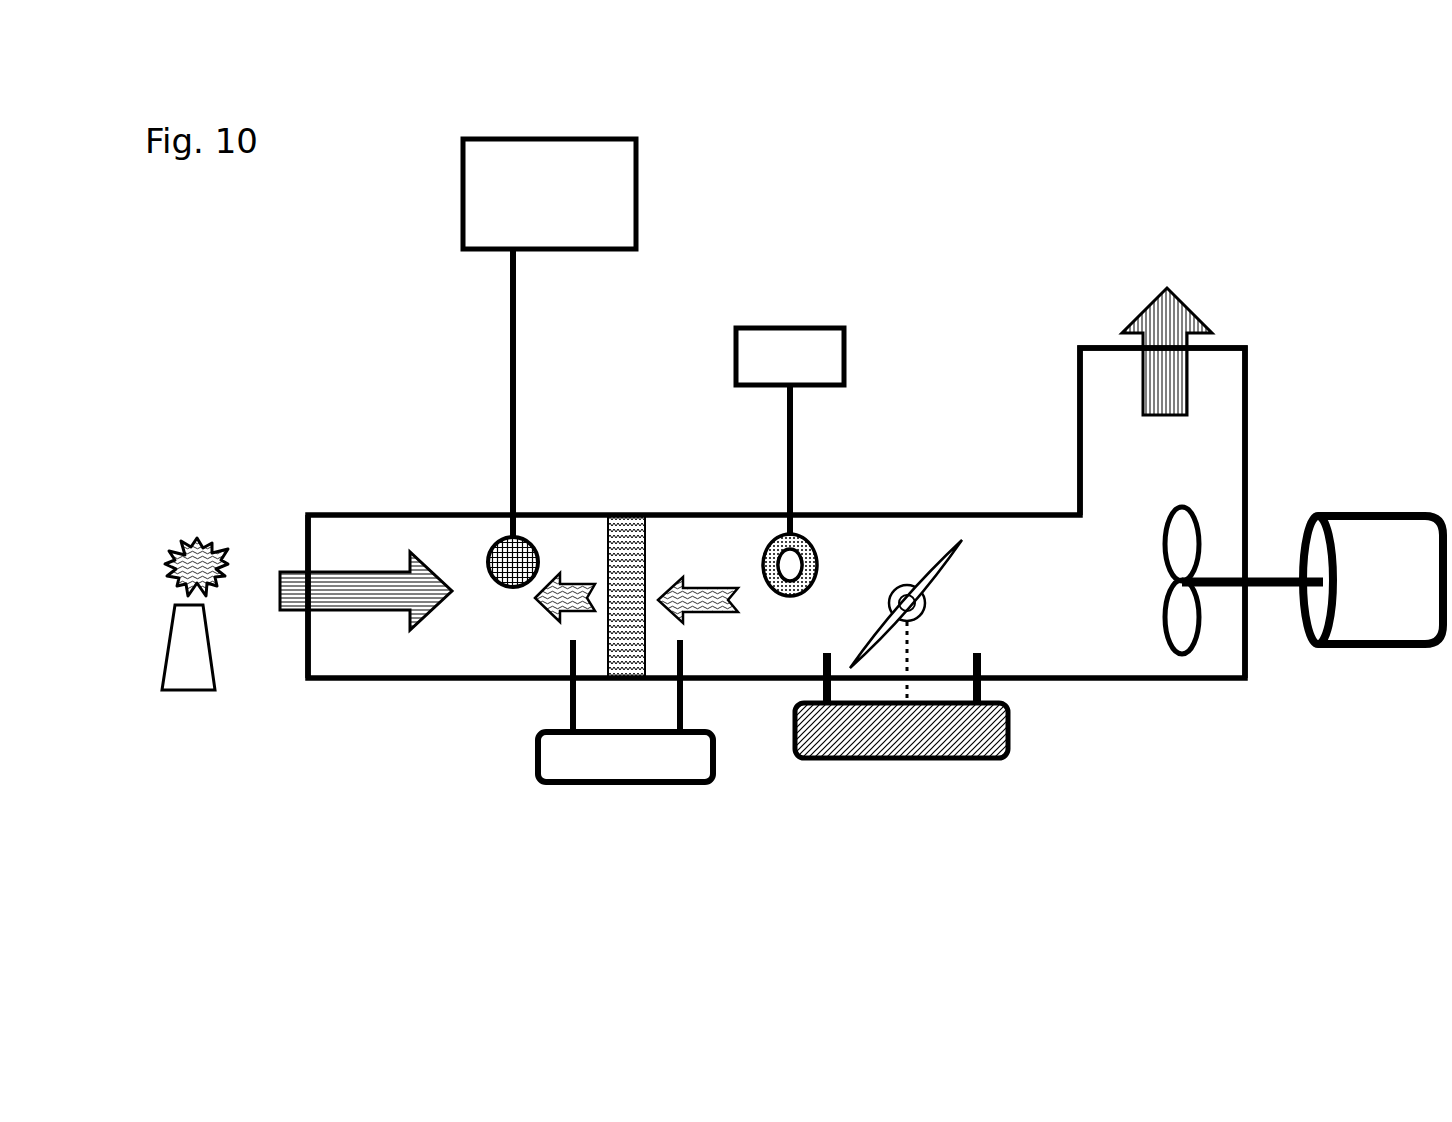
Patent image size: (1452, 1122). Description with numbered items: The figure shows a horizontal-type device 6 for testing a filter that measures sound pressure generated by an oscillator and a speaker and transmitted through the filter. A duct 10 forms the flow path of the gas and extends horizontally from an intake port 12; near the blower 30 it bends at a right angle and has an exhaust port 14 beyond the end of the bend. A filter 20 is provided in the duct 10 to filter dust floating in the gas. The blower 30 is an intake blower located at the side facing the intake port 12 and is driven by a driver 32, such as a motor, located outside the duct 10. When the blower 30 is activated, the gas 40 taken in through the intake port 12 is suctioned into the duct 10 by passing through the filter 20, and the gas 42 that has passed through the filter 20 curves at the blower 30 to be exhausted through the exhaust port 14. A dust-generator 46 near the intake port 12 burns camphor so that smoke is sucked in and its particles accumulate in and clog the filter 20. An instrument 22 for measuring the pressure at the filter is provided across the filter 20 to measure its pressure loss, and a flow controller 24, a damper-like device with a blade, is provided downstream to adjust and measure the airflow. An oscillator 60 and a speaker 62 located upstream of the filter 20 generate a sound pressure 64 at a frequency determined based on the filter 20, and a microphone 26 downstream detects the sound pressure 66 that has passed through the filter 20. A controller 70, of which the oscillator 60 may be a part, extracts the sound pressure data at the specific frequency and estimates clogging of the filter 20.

The horizontal-type device for testing a filter 6 is at (1170, 157).
The duct 10 is at (905, 512).
The intake port 12 is at (307, 518).
The exhaust port 14 is at (1115, 345).
The filter 20 is at (624, 514).
The instrument for measuring the pressure at the filter 22 is at (548, 765).
The flow controller 24 is at (880, 762).
The microphone 26 is at (512, 535).
The blower 30 is at (1182, 652).
The driver 32 is at (1373, 615).
The gas 40 is at (342, 593).
The gas 42 is at (1177, 327).
The dust-generator 46 is at (186, 535).
The oscillator 60 is at (799, 326).
The speaker 62 is at (765, 540).
The sound pressure 64 is at (712, 623).
The sound pressure 66 is at (545, 615).
The controller 70 is at (552, 137).